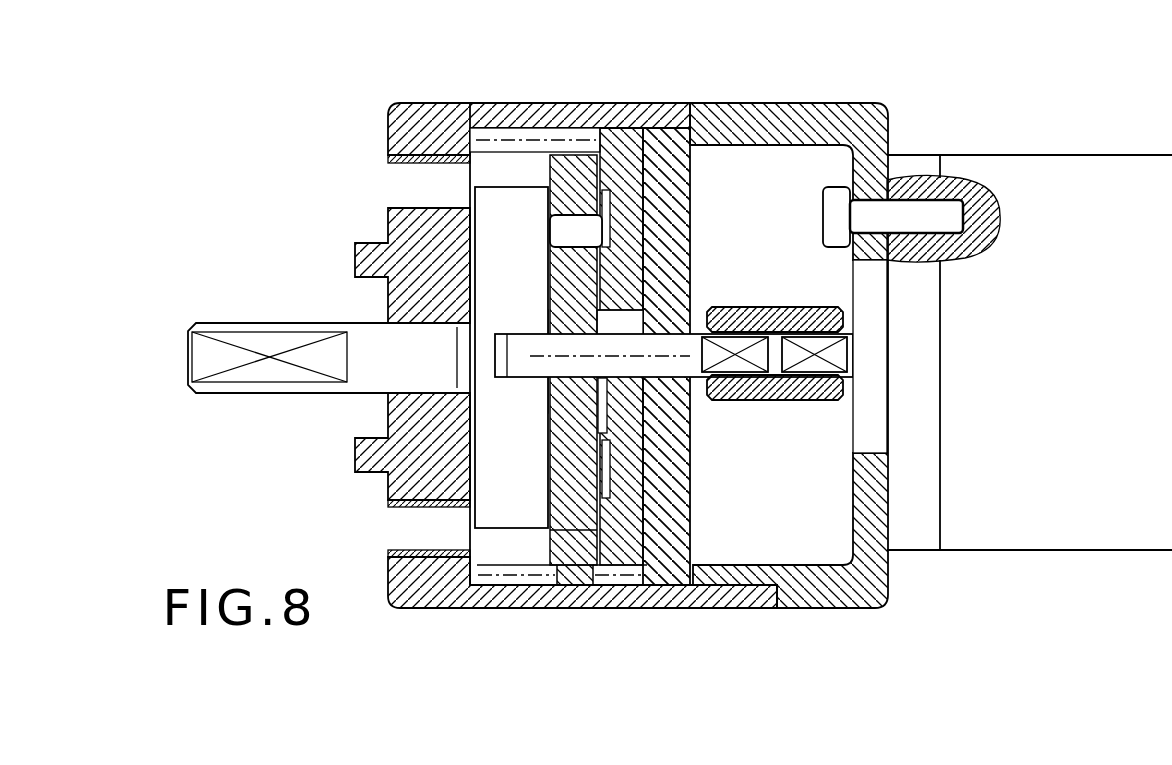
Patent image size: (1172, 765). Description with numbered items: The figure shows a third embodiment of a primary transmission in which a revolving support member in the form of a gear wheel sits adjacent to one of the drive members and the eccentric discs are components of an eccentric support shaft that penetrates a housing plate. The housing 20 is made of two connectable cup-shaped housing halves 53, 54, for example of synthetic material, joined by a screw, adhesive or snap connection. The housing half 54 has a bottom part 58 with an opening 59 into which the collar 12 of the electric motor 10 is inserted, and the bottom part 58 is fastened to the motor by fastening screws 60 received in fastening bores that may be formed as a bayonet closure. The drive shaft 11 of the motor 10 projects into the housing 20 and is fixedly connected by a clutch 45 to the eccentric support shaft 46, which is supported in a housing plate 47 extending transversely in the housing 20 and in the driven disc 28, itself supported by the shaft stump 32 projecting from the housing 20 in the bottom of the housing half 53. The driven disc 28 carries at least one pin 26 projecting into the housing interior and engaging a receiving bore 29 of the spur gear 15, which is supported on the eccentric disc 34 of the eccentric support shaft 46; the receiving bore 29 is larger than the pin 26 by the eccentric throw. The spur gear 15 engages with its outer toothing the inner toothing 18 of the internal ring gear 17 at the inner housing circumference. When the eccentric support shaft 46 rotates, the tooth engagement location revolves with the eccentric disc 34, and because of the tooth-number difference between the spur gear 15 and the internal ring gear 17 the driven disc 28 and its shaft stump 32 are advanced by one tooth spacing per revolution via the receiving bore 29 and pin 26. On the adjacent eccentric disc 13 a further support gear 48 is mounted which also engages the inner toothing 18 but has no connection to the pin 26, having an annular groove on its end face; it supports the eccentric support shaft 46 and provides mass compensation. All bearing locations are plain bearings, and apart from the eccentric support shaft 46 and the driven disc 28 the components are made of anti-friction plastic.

The electric motor 10 is at (1072, 530).
The drive shaft 11 is at (822, 360).
The collar 12 is at (877, 425).
The eccentric disc 13 is at (636, 330).
The spur gear 15 is at (572, 537).
The internal ring gear 17 is at (492, 165).
The inner toothing 18 is at (487, 573).
The housing 20 is at (612, 612).
The pin 26 is at (583, 228).
The driven disc 28 is at (522, 518).
The receiving bore 29 is at (572, 266).
The shaft stump 32 is at (293, 312).
The eccentric disc 34 is at (570, 383).
The clutch 45 is at (773, 400).
The eccentric support shaft 46 is at (688, 354).
The housing plate 47 is at (668, 150).
The support gear 48 is at (627, 183).
The cup-shaped housing half 53 is at (701, 608).
The cup-shaped housing half 54 is at (836, 582).
The bottom part 58 is at (866, 468).
The opening 59 is at (888, 452).
The fastening screw 60 is at (838, 203).